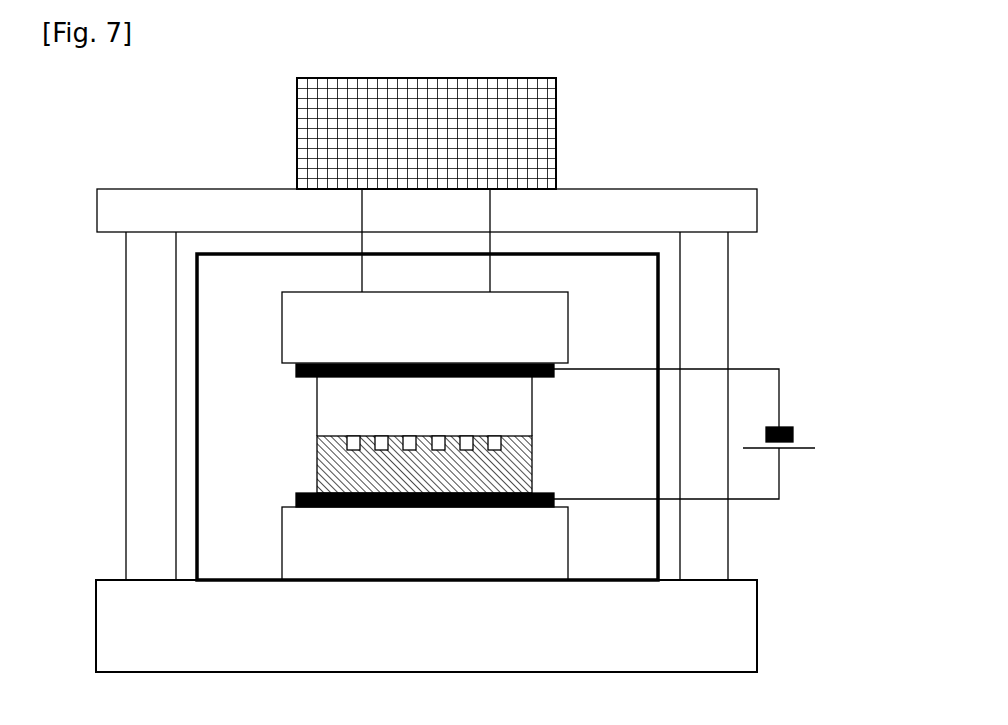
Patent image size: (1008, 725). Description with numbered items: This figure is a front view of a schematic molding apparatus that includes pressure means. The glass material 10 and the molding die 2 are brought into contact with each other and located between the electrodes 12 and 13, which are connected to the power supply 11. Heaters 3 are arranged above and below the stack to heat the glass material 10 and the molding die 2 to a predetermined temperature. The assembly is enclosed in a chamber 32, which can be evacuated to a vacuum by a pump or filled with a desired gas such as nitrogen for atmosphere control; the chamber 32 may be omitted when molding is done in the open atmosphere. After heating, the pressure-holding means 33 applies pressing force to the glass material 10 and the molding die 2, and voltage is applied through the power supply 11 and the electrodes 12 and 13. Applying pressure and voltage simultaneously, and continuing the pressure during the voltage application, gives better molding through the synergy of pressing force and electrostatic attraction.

The molding die 2 is at (343, 478).
The heaters 3 is at (310, 320).
The glass material 10 is at (347, 407).
The power supply 11 is at (802, 440).
The electrode 12 is at (553, 363).
The electrode 13 is at (553, 507).
The chamber 32 is at (208, 253).
The pressure-holding means 33 is at (532, 133).